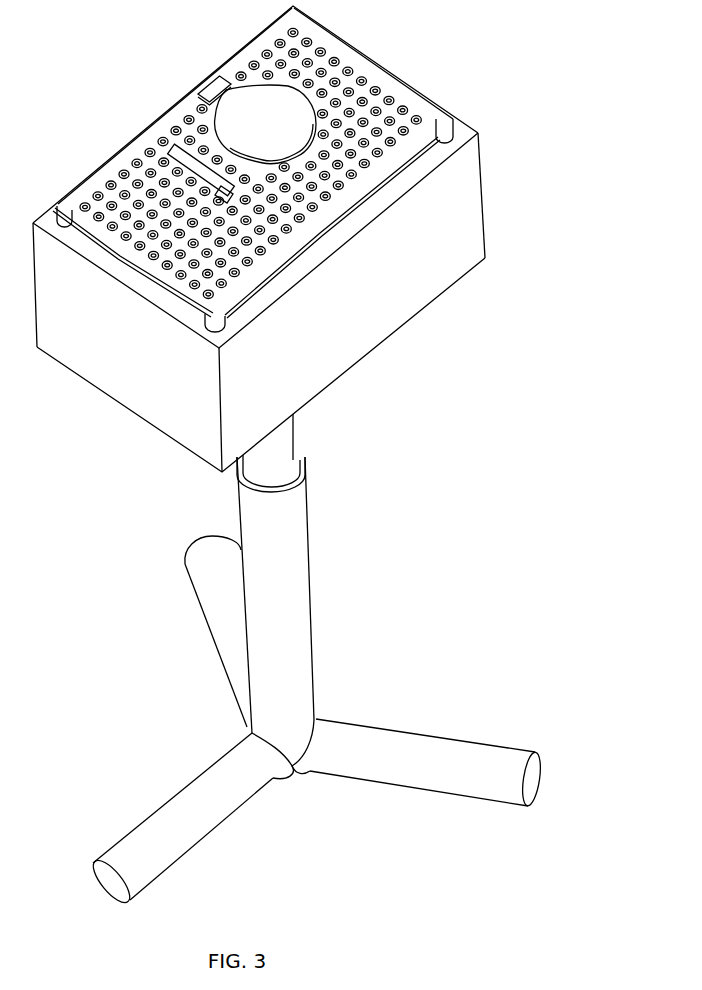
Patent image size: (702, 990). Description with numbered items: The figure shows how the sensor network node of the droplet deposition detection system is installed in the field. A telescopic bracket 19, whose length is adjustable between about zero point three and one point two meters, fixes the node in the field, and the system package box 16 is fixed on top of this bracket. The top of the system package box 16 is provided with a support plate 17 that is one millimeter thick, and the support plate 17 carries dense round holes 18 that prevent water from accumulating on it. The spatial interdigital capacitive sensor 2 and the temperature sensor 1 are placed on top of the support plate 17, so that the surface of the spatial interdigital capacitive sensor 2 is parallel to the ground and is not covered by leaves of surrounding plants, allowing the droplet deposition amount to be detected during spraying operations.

The temperature sensor 1 is at (361, 267).
The spatial interdigital capacitive sensor 2 is at (391, 187).
The system package box 16 is at (307, 239).
The support plate 17 is at (298, 242).
The round holes 18 is at (379, 446).
The telescopic bracket 19 is at (315, 661).